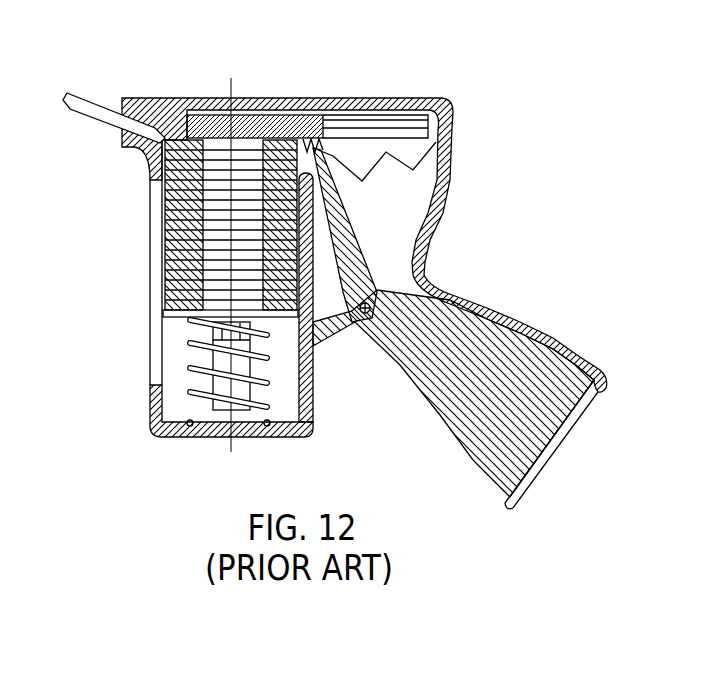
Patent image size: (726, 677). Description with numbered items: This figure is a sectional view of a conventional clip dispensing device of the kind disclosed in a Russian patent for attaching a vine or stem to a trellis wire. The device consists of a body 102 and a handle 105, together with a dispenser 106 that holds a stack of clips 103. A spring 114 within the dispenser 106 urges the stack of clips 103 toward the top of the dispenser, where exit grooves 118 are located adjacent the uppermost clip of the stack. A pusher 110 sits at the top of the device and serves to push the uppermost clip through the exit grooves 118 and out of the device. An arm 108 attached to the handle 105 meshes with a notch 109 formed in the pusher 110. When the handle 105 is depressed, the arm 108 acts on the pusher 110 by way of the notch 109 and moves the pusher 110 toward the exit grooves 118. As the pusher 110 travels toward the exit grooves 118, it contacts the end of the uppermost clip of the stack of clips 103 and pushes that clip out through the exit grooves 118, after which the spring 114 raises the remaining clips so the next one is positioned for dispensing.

The body 102 is at (548, 338).
The stack of clips 103 is at (222, 217).
The handle 105 is at (455, 398).
The dispenser 106 is at (285, 382).
The arm 108 is at (328, 197).
The notch 109 is at (322, 147).
The pusher 110 is at (277, 122).
The spring 114 is at (215, 333).
The exit grooves 118 is at (143, 152).